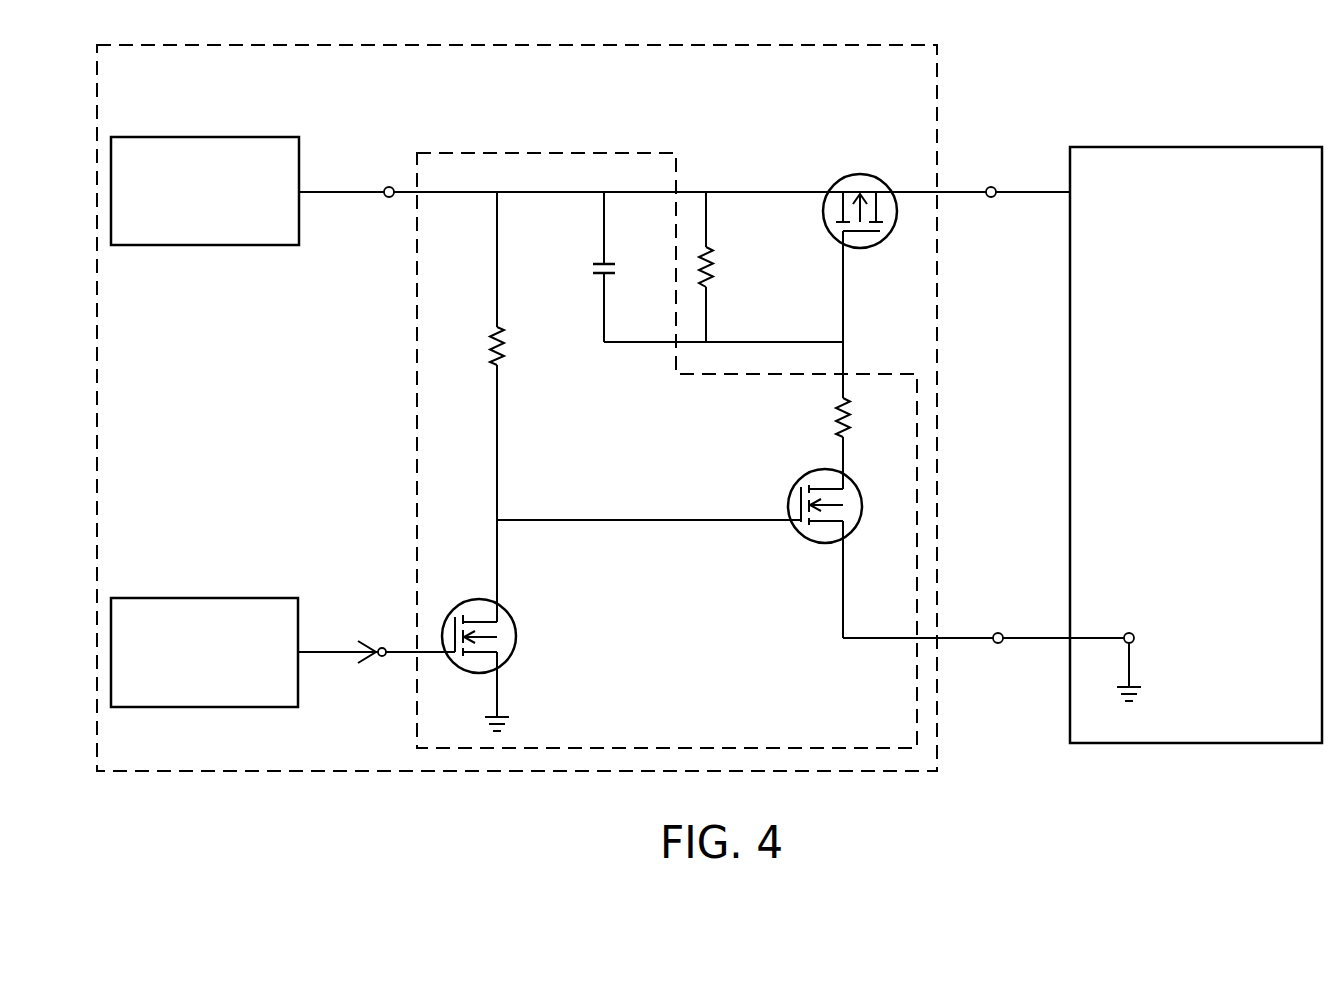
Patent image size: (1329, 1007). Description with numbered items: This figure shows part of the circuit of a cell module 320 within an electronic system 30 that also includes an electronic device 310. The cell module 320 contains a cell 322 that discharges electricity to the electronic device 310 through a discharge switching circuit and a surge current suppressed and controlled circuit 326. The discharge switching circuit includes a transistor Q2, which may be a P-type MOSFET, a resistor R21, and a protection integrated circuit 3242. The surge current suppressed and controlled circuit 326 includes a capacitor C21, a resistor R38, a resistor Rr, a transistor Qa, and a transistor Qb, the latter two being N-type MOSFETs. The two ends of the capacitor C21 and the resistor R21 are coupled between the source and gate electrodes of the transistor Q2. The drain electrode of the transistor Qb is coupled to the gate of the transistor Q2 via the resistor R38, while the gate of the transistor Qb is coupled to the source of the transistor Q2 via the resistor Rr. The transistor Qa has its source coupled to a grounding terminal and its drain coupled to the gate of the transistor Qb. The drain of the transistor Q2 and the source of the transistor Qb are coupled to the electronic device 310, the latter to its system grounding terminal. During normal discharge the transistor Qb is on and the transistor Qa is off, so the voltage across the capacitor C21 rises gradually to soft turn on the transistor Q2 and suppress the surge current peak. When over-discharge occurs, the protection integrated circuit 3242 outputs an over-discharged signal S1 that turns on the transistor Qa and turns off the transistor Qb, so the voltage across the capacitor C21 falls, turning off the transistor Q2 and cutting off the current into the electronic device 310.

The electronic system 30 is at (1328, 65).
The electronic device 310 is at (1196, 147).
The cell module 320 is at (937, 72).
The cell 322 is at (203, 137).
The surge current suppressed and controlled circuit 326 is at (546, 153).
The protection integrated circuit 3242 is at (203, 598).
The transistor Q2 is at (860, 192).
The transistor Qa is at (500, 665).
The transistor Qb is at (847, 506).
The resistor Rr is at (478, 346).
The resistor R21 is at (732, 267).
The capacitor C21 is at (629, 264).
The resistor R38 is at (869, 417).
The over-discharged signal S1 is at (376, 640).